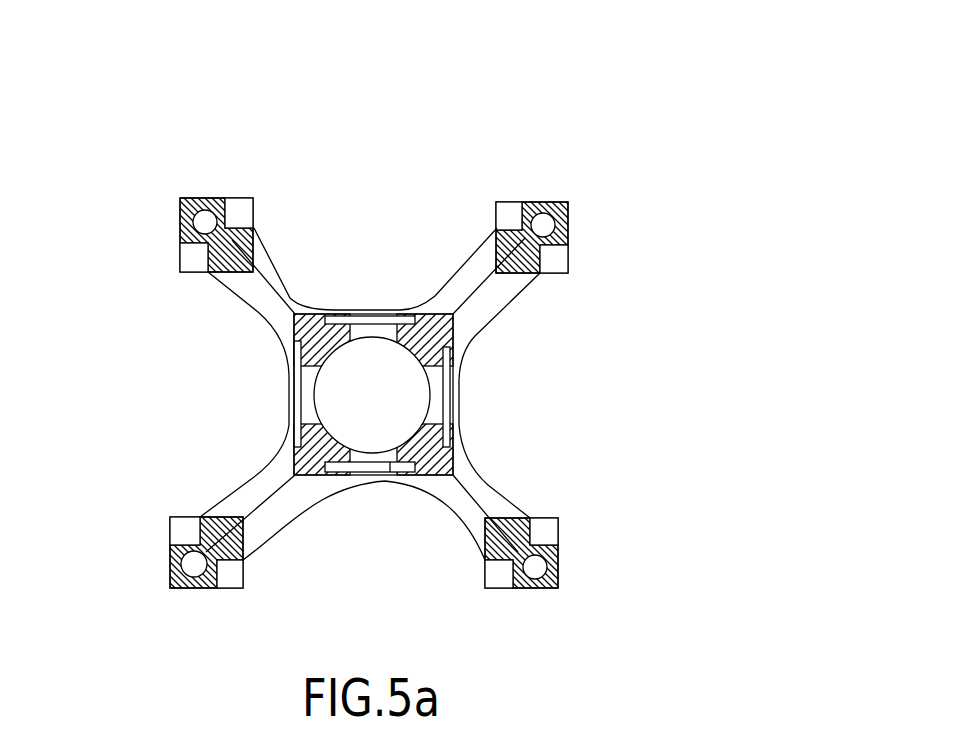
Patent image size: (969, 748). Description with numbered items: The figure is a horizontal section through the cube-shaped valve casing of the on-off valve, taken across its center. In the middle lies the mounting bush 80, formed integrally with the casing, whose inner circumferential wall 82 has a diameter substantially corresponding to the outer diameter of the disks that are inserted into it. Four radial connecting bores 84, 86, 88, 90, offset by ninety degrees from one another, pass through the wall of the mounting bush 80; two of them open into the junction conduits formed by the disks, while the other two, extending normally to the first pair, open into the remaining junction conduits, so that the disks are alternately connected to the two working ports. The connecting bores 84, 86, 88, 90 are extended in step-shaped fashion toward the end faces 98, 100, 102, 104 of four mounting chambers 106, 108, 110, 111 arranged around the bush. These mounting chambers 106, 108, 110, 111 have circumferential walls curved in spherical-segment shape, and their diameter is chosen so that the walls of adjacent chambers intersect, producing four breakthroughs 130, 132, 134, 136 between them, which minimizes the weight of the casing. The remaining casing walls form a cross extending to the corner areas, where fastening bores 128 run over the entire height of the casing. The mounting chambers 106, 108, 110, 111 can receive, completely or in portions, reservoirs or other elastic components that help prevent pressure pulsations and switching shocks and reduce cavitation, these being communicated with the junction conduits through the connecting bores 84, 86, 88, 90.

The mounting bush 80 is at (457, 331).
The inner circumferential wall 82 is at (437, 399).
The connecting bore 84 is at (450, 388).
The connecting bore 86 is at (390, 480).
The connecting bore 88 is at (288, 402).
The connecting bore 90 is at (364, 314).
The end face 98 is at (453, 451).
The end face 100 is at (427, 314).
The end face 102 is at (298, 342).
The end face 104 is at (307, 480).
The mounting chamber 106 is at (379, 550).
The mounting chamber 108 is at (549, 487).
The mounting chamber 110 is at (337, 268).
The mounting chamber 111 is at (242, 448).
The fastening bore 128 is at (194, 566).
The breakthrough 130 is at (240, 517).
The lower right arm 132 is at (480, 508).
The breakthrough 134 is at (490, 279).
The breakthrough 136 is at (263, 285).